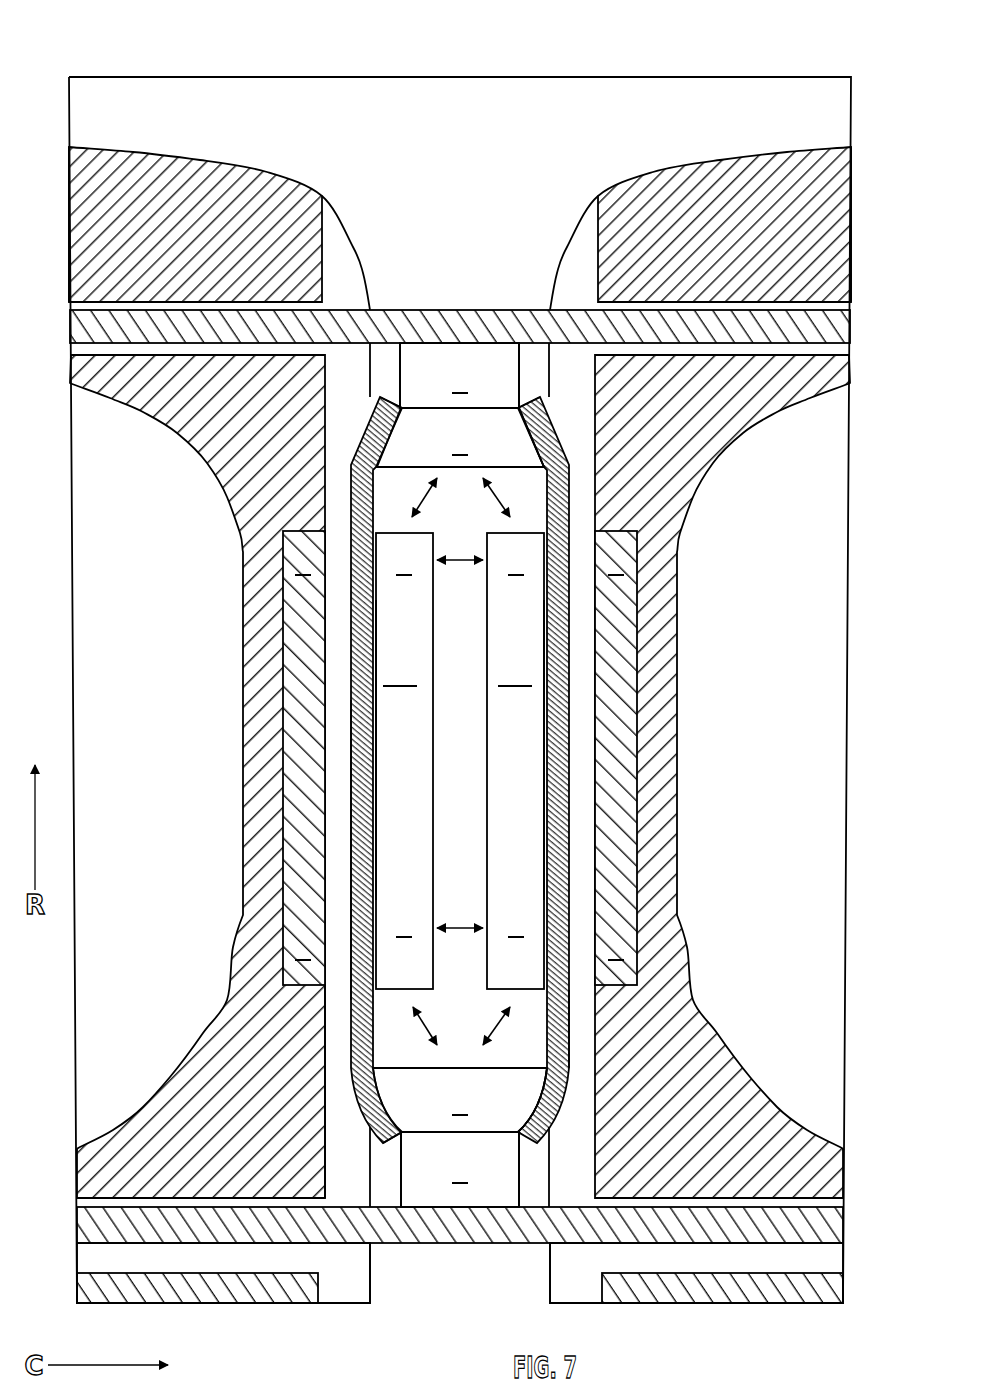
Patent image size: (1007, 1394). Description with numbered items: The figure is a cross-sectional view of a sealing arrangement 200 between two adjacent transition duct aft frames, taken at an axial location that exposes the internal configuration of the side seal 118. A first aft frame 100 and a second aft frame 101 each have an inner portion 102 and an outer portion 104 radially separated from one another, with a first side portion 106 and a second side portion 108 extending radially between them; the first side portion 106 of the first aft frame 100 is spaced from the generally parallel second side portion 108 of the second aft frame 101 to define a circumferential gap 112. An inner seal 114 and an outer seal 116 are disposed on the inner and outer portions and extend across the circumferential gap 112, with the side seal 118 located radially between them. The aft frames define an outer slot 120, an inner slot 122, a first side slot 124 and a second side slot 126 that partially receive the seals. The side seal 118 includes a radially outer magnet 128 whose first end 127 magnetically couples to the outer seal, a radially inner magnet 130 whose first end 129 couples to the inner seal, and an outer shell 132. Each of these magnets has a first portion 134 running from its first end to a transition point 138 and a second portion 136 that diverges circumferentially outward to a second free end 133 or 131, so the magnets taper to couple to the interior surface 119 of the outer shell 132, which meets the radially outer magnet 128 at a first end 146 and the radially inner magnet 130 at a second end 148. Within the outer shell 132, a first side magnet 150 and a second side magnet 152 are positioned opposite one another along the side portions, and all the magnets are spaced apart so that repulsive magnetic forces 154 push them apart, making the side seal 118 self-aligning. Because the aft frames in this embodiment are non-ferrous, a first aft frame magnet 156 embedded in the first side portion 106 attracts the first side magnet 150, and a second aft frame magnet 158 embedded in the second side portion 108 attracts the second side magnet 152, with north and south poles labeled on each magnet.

The sealing arrangement 200 is at (40, 88).
The first aft frame 100 is at (130, 165).
The second aft frame 101 is at (735, 165).
The inner portion 102 is at (83, 266).
The outer portion 104 is at (85, 1285).
The first side portion 106 is at (262, 810).
The second side portion 108 is at (665, 815).
The circumferential gap 112 is at (462, 292).
The inner seal 114 is at (352, 305).
The outer seal 116 is at (388, 1243).
The side seal 118 is at (336, 896).
The interior surface 119 is at (542, 769).
The outer slot 120 is at (255, 295).
The inner slot 122 is at (178, 1258).
The first side slot 124 is at (323, 1025).
The second side slot 126 is at (525, 1068).
The first end 127 is at (498, 340).
The radially outer magnet 128 is at (510, 375).
The first end 129 is at (438, 1207).
The radially inner magnet 130 is at (503, 1165).
The second free end 131 is at (583, 1018).
The outer shell 132 is at (352, 600).
The second free end 133 is at (530, 470).
The first portion 134 is at (417, 373).
The second portion 136 is at (400, 450).
The transition point 138 is at (398, 398).
The first end 146 is at (543, 403).
The second end 148 is at (402, 1132).
The first side magnet 150 is at (404, 761).
The second side magnet 152 is at (515, 761).
The repulsive magnetic forces 154 is at (487, 488).
The first aft frame magnet 156 is at (302, 732).
The second aft frame magnet 158 is at (612, 675).